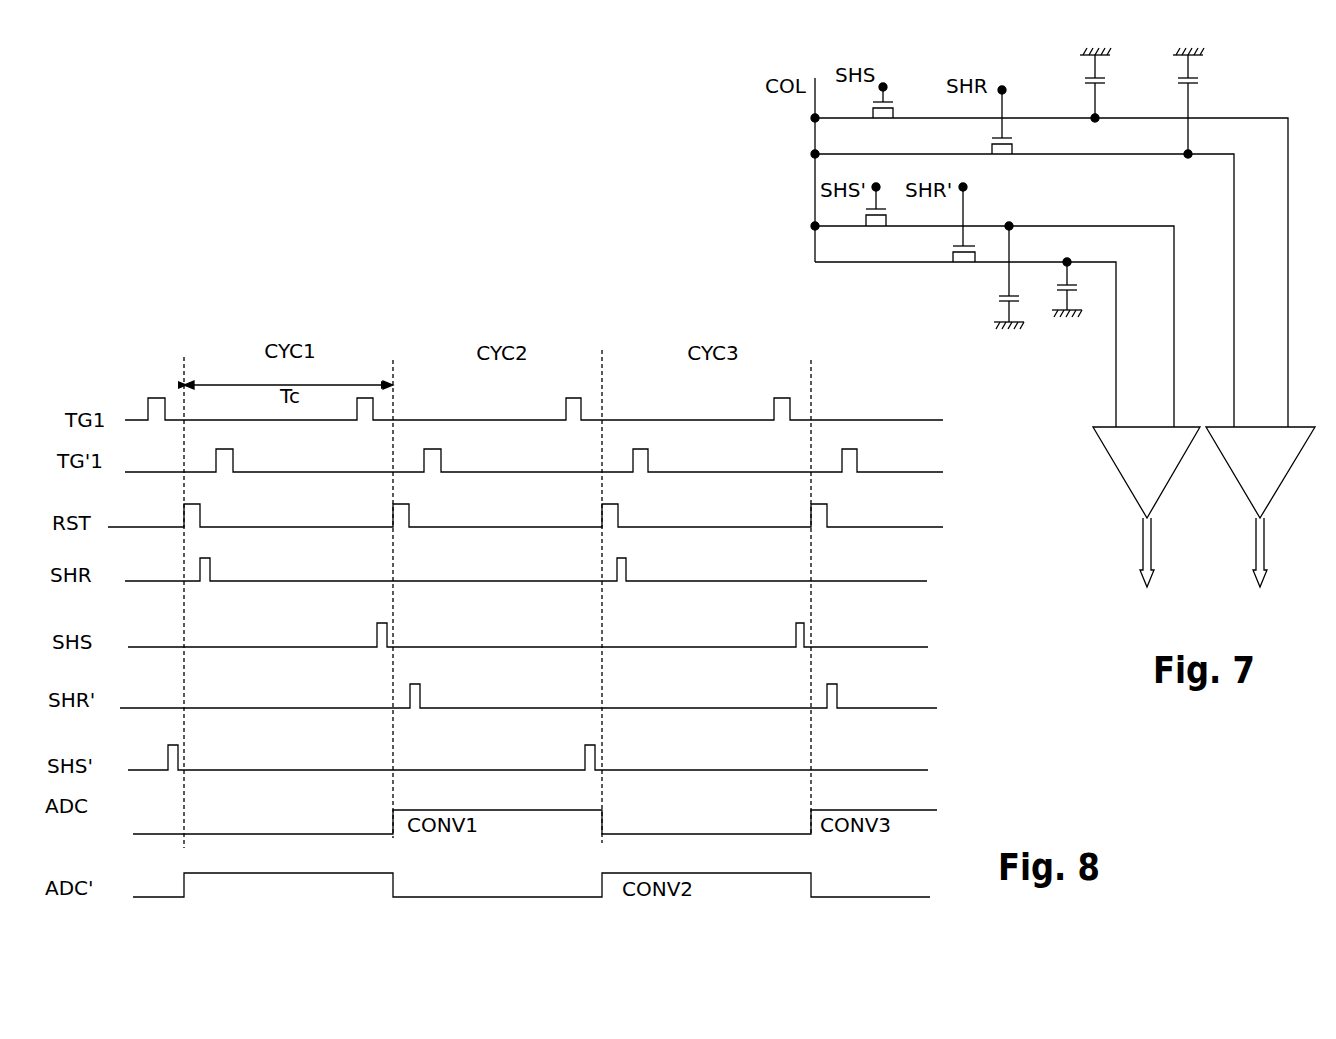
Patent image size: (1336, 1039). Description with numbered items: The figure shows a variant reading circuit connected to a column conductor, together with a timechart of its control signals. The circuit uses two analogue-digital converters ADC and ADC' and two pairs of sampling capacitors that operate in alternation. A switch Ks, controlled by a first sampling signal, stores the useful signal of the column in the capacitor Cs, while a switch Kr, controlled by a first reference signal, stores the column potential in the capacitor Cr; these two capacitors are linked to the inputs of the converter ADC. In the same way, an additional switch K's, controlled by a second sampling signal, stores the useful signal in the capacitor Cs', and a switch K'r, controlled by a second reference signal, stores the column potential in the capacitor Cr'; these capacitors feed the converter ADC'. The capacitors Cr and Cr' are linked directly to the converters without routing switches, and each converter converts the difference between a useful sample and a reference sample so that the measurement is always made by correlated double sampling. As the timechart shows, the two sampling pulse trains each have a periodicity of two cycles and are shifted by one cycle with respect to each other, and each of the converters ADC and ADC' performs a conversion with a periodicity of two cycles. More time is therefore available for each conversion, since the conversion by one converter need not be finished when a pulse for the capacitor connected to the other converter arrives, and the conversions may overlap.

The switch Ks is at (886, 112).
The switch Kr is at (1001, 131).
The additional switch K's is at (878, 216).
The switch K'r is at (964, 234).
The capacitor Cs is at (1106, 85).
The capacitor Cr is at (1198, 103).
The capacitor Cs' is at (1019, 275).
The capacitor Cr' is at (1082, 287).
The analogue-digital converter ADC is at (1260, 507).
The analogue-digital converter ADC' is at (1146, 507).